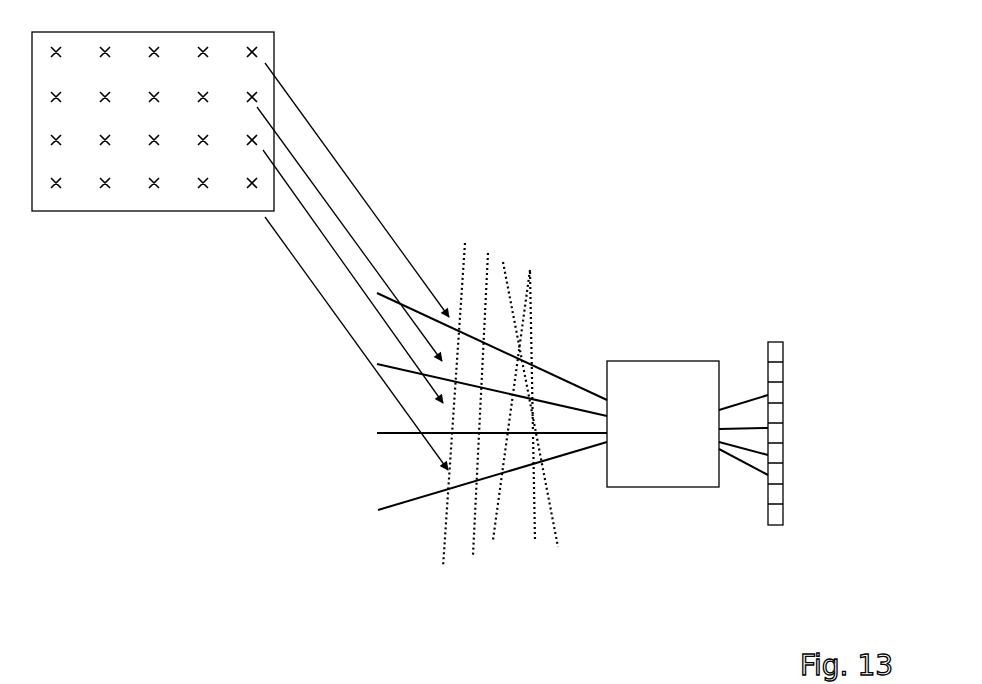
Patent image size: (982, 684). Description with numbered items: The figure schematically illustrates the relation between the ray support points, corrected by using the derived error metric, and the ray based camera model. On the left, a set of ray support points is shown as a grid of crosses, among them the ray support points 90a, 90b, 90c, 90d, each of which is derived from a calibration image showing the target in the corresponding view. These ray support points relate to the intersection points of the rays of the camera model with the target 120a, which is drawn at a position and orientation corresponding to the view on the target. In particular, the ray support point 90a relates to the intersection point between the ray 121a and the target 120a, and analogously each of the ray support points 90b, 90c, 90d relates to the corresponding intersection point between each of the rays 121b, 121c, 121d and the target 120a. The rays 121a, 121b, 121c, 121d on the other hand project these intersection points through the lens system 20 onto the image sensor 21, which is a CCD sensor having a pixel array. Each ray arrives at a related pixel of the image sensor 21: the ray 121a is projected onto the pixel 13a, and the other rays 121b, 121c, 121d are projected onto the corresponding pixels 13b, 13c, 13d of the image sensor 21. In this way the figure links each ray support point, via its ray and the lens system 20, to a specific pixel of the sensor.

The ray support point 90a is at (265, 50).
The ray support point 90b is at (262, 97).
The ray support point 90c is at (245, 140).
The ray support point 90d is at (245, 183).
The target 120a is at (467, 252).
The ray 121a is at (403, 307).
The ray 121b is at (403, 370).
The ray 121c is at (405, 433).
The ray 121d is at (412, 500).
The lens system 20 is at (648, 361).
The image sensor 21 is at (765, 512).
The pixel 13a is at (783, 473).
The pixel 13b is at (783, 453).
The pixel 13c is at (783, 430).
The pixel 13d is at (783, 390).